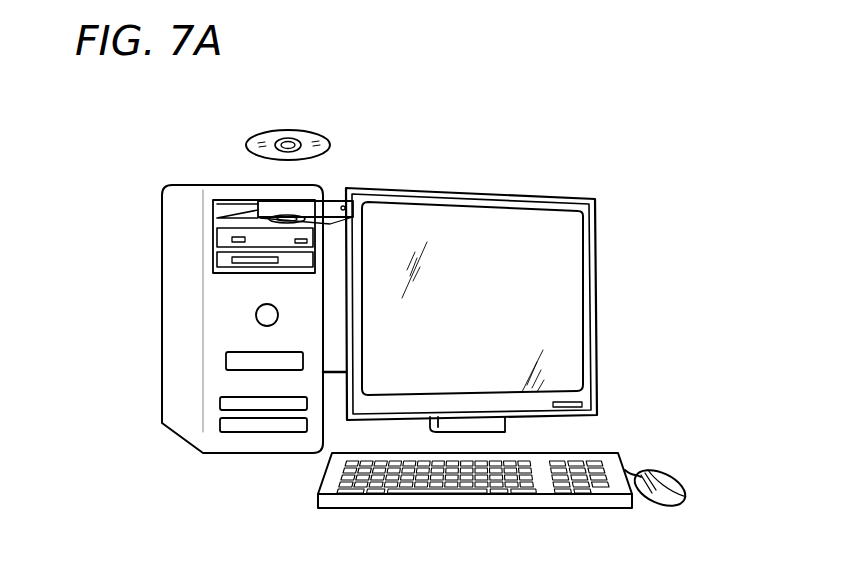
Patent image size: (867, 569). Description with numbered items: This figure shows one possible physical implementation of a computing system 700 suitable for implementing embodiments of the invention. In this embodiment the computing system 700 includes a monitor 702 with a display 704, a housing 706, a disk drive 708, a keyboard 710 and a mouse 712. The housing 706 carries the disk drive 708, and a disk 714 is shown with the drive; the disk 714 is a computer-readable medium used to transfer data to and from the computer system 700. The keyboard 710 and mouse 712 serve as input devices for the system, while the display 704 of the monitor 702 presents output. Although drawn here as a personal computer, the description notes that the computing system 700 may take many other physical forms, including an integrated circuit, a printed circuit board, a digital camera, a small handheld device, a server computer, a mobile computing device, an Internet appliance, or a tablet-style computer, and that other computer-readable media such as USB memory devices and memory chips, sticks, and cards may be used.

The computing system 700 is at (643, 151).
The monitor 702 is at (600, 280).
The display 704 is at (495, 222).
The housing 706 is at (163, 308).
The disk drive 708 is at (270, 205).
The keyboard 710 is at (482, 508).
The mouse 712 is at (677, 480).
The disk 714 is at (283, 130).